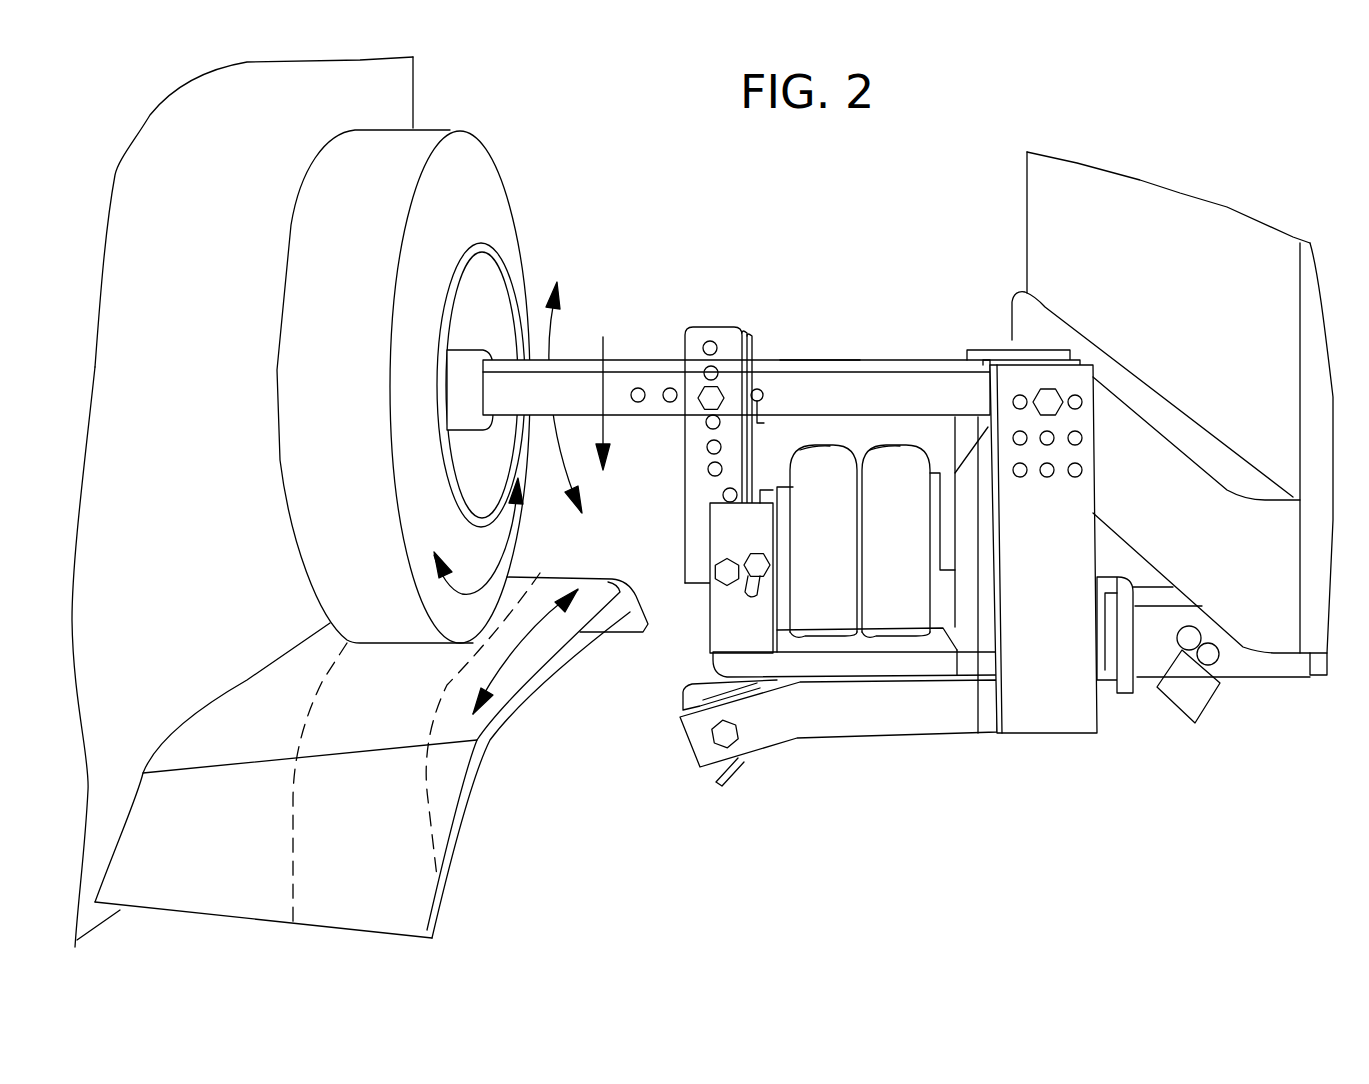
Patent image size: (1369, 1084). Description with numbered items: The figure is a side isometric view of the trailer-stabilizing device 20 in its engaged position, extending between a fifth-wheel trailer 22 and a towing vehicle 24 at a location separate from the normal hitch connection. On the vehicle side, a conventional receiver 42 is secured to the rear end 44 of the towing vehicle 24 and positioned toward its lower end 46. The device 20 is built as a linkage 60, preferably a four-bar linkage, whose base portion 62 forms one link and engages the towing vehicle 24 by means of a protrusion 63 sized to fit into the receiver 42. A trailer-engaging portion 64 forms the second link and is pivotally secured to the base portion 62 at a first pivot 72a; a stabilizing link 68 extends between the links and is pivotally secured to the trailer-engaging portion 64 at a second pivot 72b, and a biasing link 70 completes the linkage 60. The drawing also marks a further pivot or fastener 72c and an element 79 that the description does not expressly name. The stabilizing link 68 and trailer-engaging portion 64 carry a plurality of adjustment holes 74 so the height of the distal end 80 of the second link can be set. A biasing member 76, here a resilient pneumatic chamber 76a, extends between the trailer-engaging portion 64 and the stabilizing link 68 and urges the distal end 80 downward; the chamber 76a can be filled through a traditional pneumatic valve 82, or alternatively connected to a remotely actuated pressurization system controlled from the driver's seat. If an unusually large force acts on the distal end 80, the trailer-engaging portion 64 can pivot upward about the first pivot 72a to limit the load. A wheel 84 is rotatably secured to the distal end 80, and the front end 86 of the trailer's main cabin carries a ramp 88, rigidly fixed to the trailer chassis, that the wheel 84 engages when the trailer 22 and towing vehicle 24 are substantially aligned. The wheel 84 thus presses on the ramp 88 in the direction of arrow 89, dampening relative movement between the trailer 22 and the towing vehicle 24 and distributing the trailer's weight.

The trailer-stabilizing device 20 is at (817, 300).
The fifth-wheel trailer 22 is at (382, 95).
The towing vehicle 24 is at (1198, 220).
The receiver 42 is at (1253, 663).
The rear end 44 is at (1170, 287).
The lower end 46 is at (1308, 663).
The linkage 60 is at (660, 784).
The base portion 62 is at (1040, 703).
The protrusion 63 is at (1105, 622).
The trailer-engaging portion 64 is at (576, 355).
The stabilizing link 68 is at (692, 330).
The biasing link 70 is at (870, 663).
The first pivot 72a is at (1050, 403).
The second pivot 72b is at (727, 583).
The bolt 72c is at (712, 398).
The adjustment holes 74 is at (670, 387).
The biasing member 76 is at (882, 518).
The resilient pneumatic chamber 76a is at (885, 457).
The pin 79 is at (767, 368).
The distal end 80 is at (490, 352).
The pneumatic valve 82 is at (770, 572).
The wheel 84 is at (477, 172).
The front end 86 is at (197, 547).
The ramp 88 is at (520, 660).
The arrow 89 is at (603, 435).